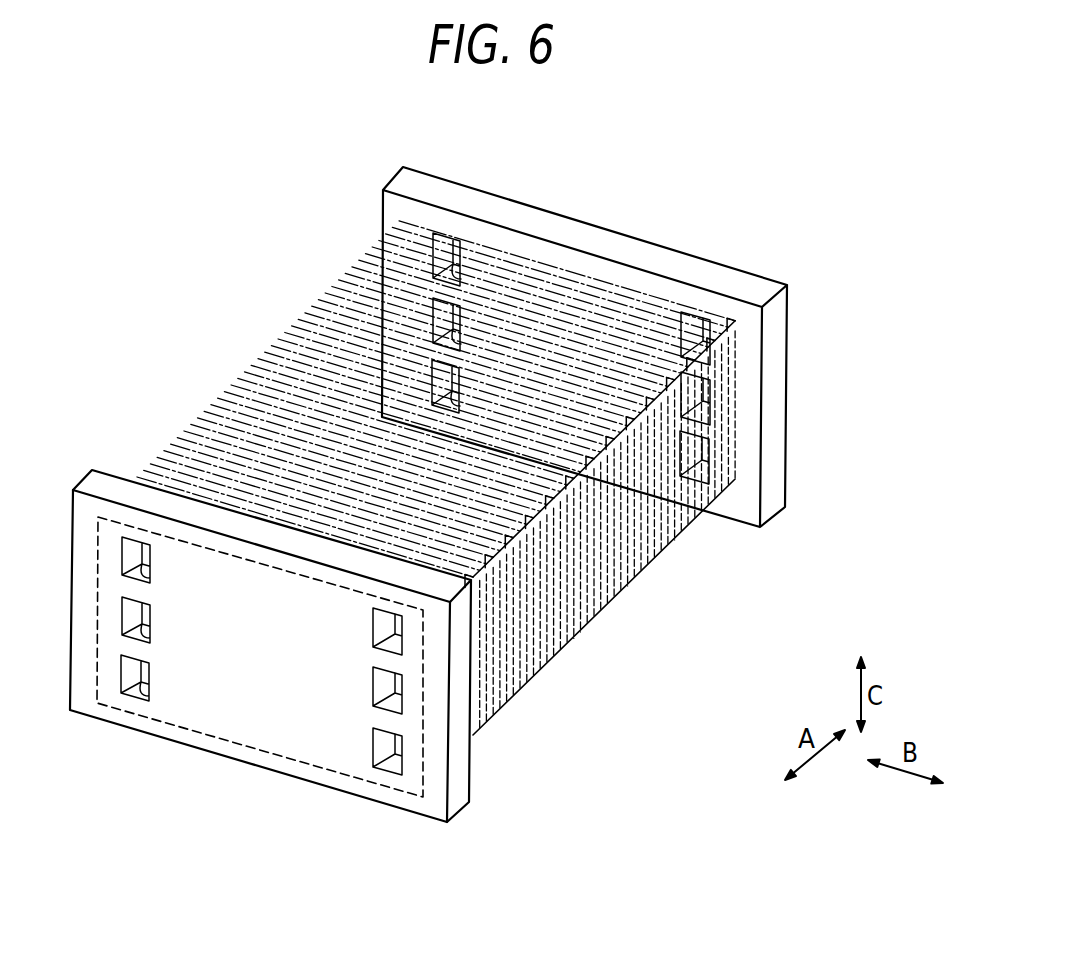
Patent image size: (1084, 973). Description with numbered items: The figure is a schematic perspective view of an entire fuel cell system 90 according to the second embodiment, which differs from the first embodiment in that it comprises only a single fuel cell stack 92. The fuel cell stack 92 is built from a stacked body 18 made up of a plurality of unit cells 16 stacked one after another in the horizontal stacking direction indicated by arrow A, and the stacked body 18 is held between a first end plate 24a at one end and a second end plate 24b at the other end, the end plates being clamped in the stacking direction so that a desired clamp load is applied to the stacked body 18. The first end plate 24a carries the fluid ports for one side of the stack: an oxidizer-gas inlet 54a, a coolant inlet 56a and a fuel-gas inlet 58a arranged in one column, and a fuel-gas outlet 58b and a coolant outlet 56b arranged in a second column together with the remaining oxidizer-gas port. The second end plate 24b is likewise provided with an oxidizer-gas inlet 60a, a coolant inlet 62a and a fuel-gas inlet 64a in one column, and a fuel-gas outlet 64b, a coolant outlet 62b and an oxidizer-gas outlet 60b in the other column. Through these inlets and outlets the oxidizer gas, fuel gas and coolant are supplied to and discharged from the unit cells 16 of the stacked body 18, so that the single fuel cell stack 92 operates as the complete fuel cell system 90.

The fuel cell system 90 is at (240, 282).
The fuel cell stack 92 is at (200, 758).
The first end plate 24a is at (297, 737).
The second end plate 24b is at (652, 258).
The unit cell 16 is at (652, 560).
The stacked body 18 is at (676, 632).
The oxidizer-gas inlet 54a is at (152, 576).
The coolant inlet 56a is at (152, 636).
The fuel-gas inlet 58a is at (151, 696).
The fuel-gas outlet 58b is at (387, 631).
The coolant outlet 56b is at (390, 691).
The oxidizer-gas inlet 60a is at (462, 283).
The coolant inlet 62a is at (461, 343).
The fuel-gas inlet 64a is at (460, 402).
The fuel-gas outlet 64b is at (695, 339).
The coolant outlet 62b is at (678, 398).
The oxidizer-gas outlet 60b is at (695, 474).